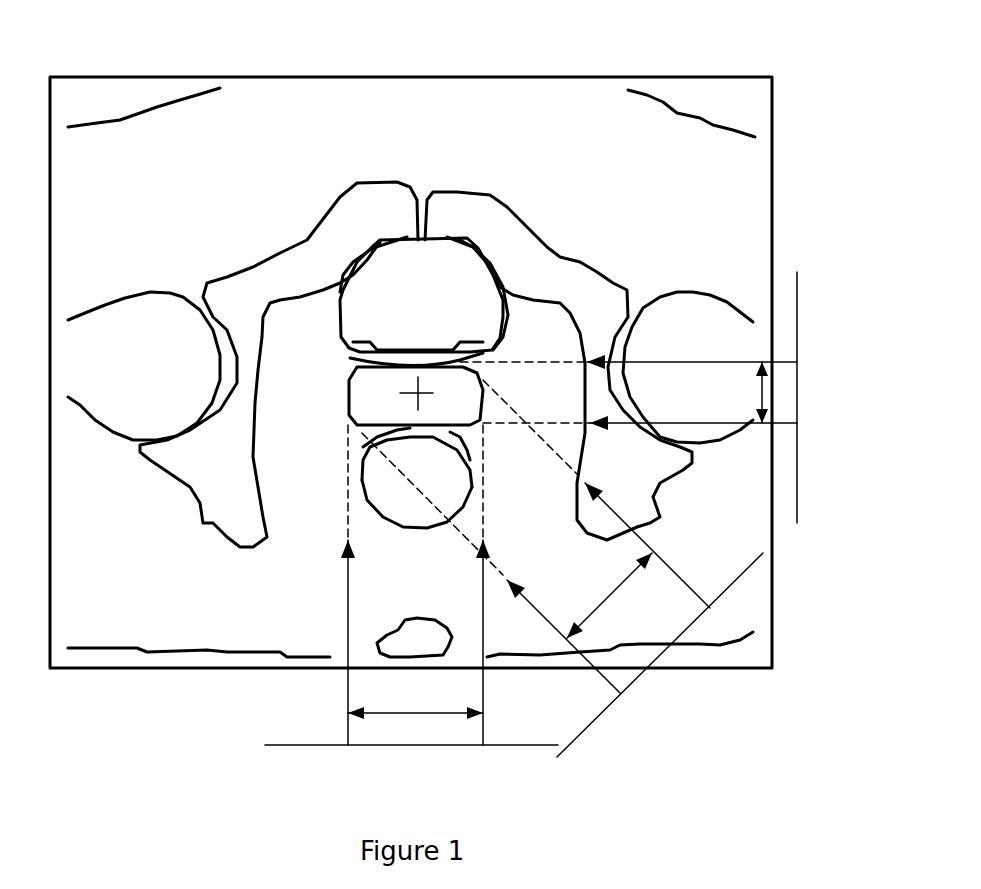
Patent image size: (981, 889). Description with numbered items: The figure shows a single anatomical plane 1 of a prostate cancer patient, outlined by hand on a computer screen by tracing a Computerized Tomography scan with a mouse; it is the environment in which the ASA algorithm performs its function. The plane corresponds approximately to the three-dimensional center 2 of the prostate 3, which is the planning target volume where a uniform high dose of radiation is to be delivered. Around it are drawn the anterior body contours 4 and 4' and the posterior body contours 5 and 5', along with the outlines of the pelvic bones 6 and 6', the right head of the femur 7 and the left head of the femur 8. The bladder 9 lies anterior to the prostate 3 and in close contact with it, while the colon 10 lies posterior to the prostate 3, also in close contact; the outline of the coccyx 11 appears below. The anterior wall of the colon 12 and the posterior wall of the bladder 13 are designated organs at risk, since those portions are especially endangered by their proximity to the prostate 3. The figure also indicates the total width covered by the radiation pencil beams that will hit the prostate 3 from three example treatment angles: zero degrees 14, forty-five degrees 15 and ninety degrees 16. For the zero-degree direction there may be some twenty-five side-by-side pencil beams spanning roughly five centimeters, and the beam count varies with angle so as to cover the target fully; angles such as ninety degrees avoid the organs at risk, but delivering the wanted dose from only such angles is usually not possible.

The plane 1 is at (376, 77).
The three-dimensional center 2 is at (403, 398).
The prostate 3 is at (350, 416).
The anterior body contour 4 is at (144, 82).
The anterior body contour 4' is at (691, 87).
The posterior body contour 5 is at (199, 686).
The posterior body contour 5' is at (636, 677).
The pelvic bone 6 is at (279, 323).
The pelvic bone 6' is at (558, 320).
The right head of the femur 7 is at (150, 292).
The left head of the femur 8 is at (725, 292).
The bladder 9 is at (342, 330).
The colon 10 is at (403, 528).
The coccyx 11 is at (370, 647).
The anterior wall of the colon 12 is at (397, 440).
The posterior wall of the bladder 13 is at (440, 337).
The total width covered by pencil beams at 0° 14 is at (423, 716).
The total width covered by pencil beams at 45° 15 is at (617, 593).
The total width covered by pencil beams at 90° 16 is at (767, 395).